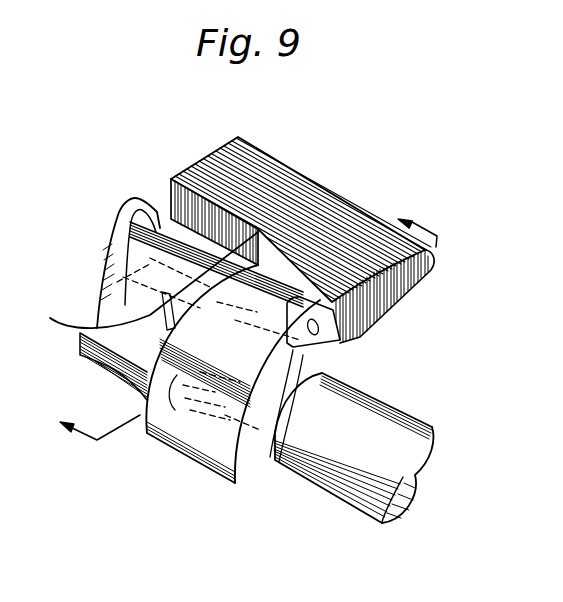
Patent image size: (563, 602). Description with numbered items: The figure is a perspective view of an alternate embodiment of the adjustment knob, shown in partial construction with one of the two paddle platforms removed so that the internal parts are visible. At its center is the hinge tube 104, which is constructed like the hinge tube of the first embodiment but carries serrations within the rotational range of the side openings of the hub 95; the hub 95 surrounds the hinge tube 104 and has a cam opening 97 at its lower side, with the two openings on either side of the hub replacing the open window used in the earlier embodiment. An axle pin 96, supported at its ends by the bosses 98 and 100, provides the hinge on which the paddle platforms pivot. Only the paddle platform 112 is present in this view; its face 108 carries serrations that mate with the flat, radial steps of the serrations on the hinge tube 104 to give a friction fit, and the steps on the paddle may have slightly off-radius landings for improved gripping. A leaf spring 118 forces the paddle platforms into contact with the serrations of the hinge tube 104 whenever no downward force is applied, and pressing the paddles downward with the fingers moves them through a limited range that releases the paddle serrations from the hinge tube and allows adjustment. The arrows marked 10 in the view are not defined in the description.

The direction of insertion 10 is at (239, 322).
The hub 95 is at (80, 357).
The axle pin 96 is at (160, 228).
The cam opening 97 is at (172, 410).
The boss 98 is at (120, 225).
The boss 100 is at (327, 357).
The hinge tube 104 is at (408, 432).
The face of paddle platform 108 is at (10, 100).
The paddle platform 112 is at (360, 276).
The leaf spring 118 is at (264, 265).